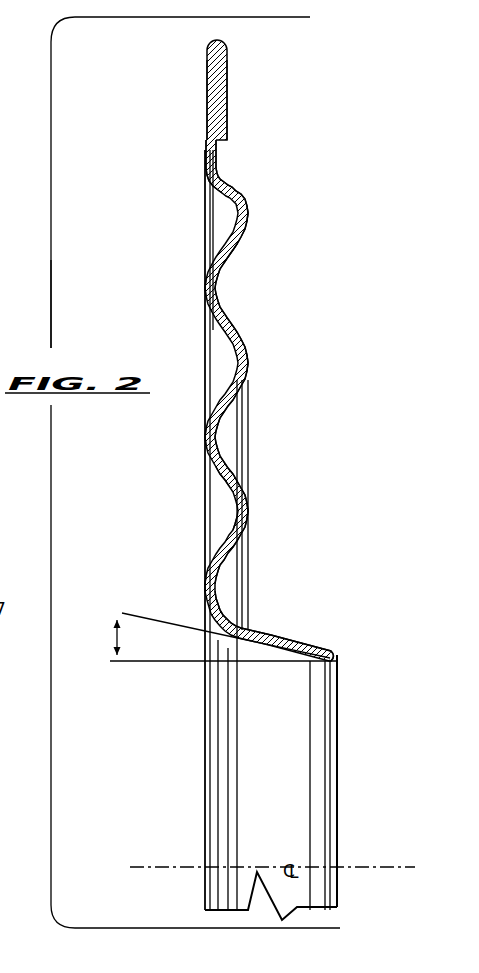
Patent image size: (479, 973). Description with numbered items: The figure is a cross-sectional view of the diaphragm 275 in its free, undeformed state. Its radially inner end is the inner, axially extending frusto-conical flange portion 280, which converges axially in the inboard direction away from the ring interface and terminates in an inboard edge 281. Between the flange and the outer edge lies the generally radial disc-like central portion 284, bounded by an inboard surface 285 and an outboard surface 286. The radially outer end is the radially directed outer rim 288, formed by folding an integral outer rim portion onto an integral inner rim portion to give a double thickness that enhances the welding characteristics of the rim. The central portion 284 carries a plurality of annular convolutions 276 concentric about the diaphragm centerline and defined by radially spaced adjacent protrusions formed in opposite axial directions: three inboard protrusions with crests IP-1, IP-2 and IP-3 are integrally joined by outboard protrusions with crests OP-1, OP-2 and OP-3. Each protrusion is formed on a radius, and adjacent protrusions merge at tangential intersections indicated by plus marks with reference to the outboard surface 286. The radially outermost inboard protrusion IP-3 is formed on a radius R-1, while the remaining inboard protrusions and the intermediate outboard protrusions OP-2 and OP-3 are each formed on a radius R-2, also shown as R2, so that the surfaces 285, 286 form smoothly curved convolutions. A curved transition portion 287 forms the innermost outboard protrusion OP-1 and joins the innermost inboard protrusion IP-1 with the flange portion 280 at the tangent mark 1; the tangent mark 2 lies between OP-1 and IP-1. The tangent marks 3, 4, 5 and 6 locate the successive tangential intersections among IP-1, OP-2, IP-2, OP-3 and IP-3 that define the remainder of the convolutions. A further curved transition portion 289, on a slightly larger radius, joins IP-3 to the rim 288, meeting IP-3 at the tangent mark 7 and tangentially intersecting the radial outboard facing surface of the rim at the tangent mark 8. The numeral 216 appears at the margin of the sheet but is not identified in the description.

The diaphragm 275 is at (300, 333).
The outer rim portion 288 is at (230, 71).
The curved transition portion 289 is at (229, 164).
The tangent mark 8 is at (210, 143).
The tangent mark 7 is at (224, 184).
The radius R-1 is at (236, 215).
The inboard crest IP-3 is at (249, 213).
The annular convolutions 276 is at (239, 254).
The tangent mark 6 is at (221, 247).
The outboard surface 286 is at (213, 232).
The radius R2 is at (217, 290).
The outboard crest OP-3 is at (207, 288).
The tangent mark 5 is at (226, 335).
The radius R-2 is at (230, 362).
The inboard crest IP-2 is at (249, 366).
The tangent mark 4 is at (240, 390).
The central portion 284 is at (253, 397).
The outboard crest OP-2 is at (206, 433).
The inboard surface 285 is at (222, 480).
The tangent mark 3 is at (243, 485).
The inboard crest IP-1 is at (249, 508).
The tangent mark 2 is at (227, 534).
The outboard crest OP-1 is at (206, 583).
The curved transition portion 287 is at (219, 582).
The tangent mark 1 is at (247, 637).
The frusto-conical flange portion 280 is at (293, 640).
The inboard edge 281 is at (333, 652).
The element 216 is at (26, 304).